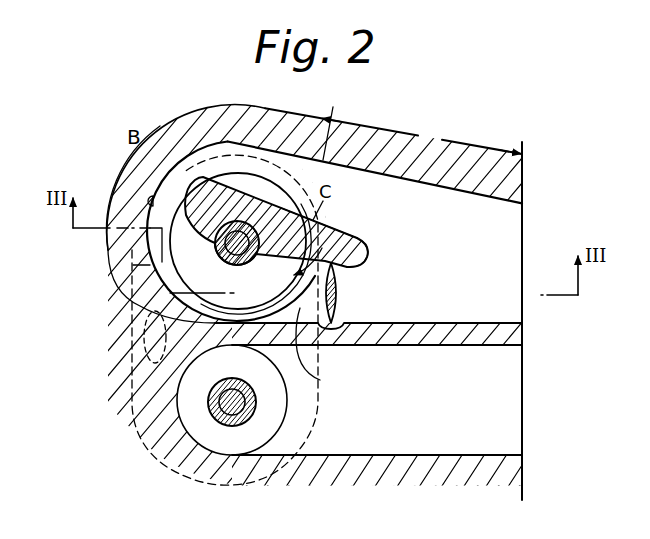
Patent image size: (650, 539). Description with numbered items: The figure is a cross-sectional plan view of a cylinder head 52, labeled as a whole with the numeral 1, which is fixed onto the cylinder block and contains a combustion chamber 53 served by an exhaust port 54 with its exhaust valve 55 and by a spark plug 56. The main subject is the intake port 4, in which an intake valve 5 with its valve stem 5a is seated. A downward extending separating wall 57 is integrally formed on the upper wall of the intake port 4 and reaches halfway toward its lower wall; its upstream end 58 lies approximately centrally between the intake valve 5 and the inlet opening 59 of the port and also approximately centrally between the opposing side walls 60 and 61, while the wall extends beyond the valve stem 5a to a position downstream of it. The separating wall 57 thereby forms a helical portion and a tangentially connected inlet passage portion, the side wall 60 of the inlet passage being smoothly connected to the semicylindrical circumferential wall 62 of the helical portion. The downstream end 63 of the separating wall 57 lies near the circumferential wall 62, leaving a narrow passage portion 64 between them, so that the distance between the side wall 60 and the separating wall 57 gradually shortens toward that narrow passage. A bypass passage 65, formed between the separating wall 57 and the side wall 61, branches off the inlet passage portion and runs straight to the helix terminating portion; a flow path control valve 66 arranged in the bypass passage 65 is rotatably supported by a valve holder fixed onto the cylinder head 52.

The hinge assembly 1 is at (524, 168).
The intake port 4 is at (491, 269).
The intake valve 5 is at (140, 264).
The valve stem 5a is at (228, 226).
The cylinder head 52 is at (468, 473).
The combustion chamber 53 is at (132, 408).
The exhaust port 54 is at (478, 419).
The exhaust valve 55 is at (216, 444).
The spark plug 56 is at (130, 361).
The separating wall 57 is at (331, 226).
The upstream end 58 is at (370, 256).
The inlet opening 59 is at (522, 238).
The side wall 60 is at (379, 166).
The side wall 61 is at (382, 330).
The circumferential wall 62 is at (125, 180).
The downstream end 63 is at (190, 179).
The narrow passage portion 64 is at (157, 126).
The bypass passage 65 is at (327, 353).
The flow path control valve 66 is at (340, 290).